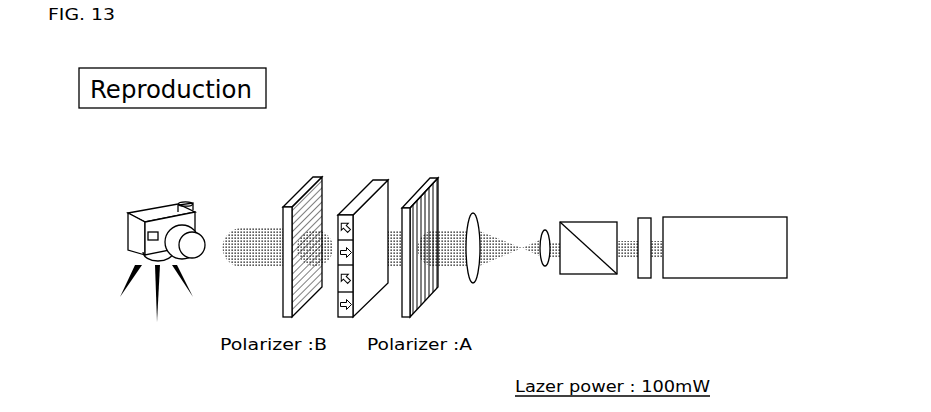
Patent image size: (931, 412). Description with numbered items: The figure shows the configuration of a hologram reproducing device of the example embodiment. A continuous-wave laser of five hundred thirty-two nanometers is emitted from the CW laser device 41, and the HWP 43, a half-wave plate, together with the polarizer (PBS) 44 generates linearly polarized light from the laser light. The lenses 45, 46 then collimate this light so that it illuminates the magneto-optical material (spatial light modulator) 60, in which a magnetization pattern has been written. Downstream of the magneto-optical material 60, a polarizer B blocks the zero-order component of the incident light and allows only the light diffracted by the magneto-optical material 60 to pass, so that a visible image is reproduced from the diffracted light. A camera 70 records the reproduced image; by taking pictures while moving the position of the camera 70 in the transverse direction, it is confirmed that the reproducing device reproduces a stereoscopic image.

The camera 70 is at (128, 241).
The magneto-optical material (spatial light modulator) 60 is at (387, 179).
The lens 46 is at (473, 212).
The lens 45 is at (543, 229).
The polarizer (PBS) 44 is at (606, 276).
The HWP (λ/2 plate) 43 is at (646, 279).
The CW laser device 41 is at (746, 216).